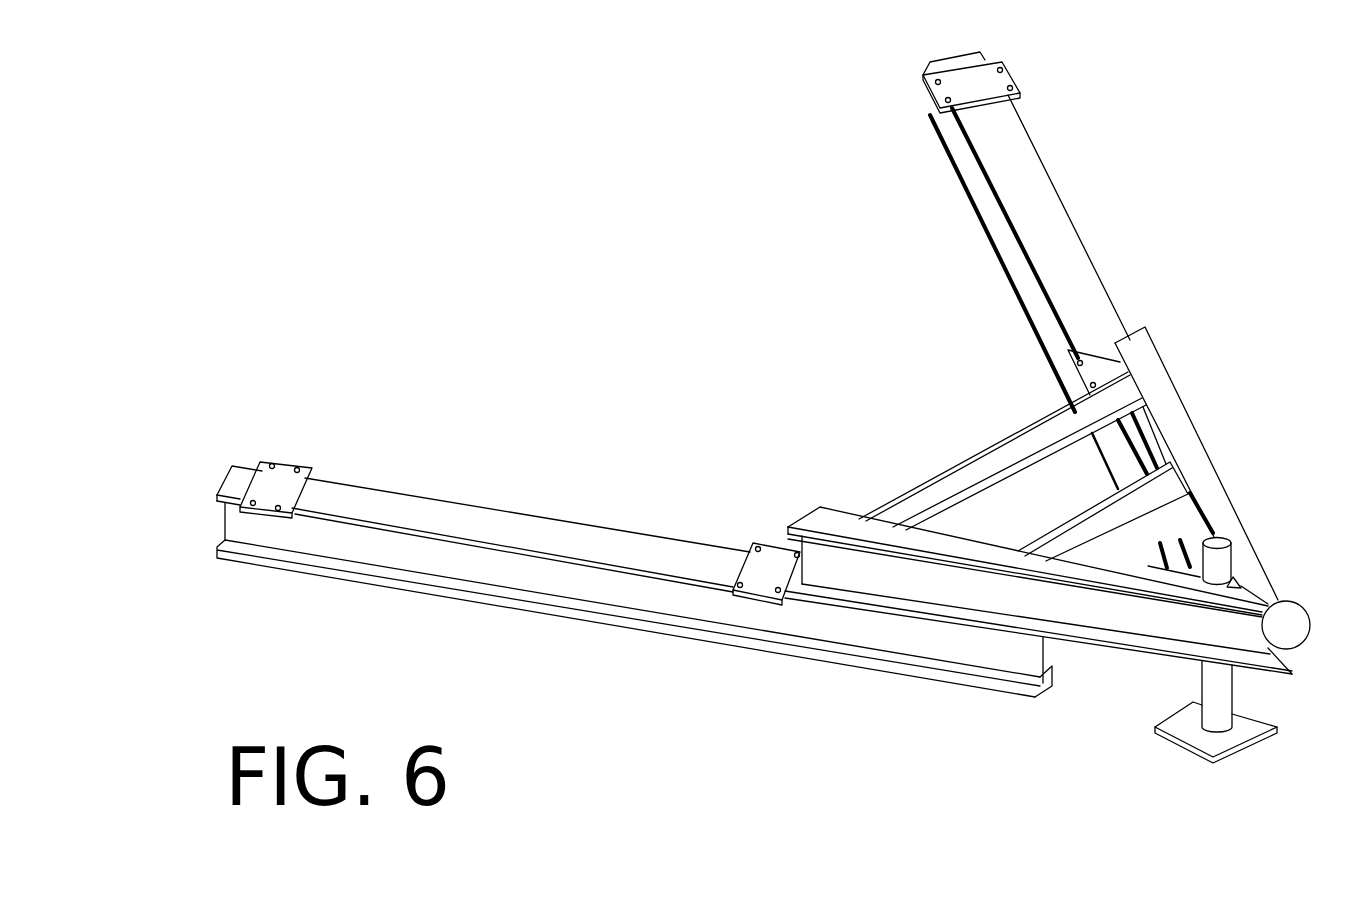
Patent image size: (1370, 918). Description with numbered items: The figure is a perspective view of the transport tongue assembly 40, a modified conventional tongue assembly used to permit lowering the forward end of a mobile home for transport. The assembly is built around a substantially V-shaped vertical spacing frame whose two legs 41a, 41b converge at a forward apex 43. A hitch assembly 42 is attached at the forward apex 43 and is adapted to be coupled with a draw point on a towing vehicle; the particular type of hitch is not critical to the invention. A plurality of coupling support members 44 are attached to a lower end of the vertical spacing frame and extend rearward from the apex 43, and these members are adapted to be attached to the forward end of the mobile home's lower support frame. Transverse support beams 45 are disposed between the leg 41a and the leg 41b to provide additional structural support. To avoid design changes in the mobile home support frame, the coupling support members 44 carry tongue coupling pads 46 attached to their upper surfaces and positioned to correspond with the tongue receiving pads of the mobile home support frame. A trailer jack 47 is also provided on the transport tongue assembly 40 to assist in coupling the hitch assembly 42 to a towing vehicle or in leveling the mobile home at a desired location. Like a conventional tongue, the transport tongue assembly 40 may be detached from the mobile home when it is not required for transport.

The transport tongue assembly 40 is at (582, 242).
The leg of vertical spacing frame 41a is at (1150, 360).
The leg of vertical spacing frame 41b is at (1117, 617).
The hitch assembly 42 is at (1289, 617).
The forward apex 43 is at (1290, 677).
The coupling support member 44 is at (400, 552).
The transverse support beam 45 is at (1123, 503).
The tongue coupling pad 46 is at (285, 475).
The trailer jack 47 is at (1219, 538).